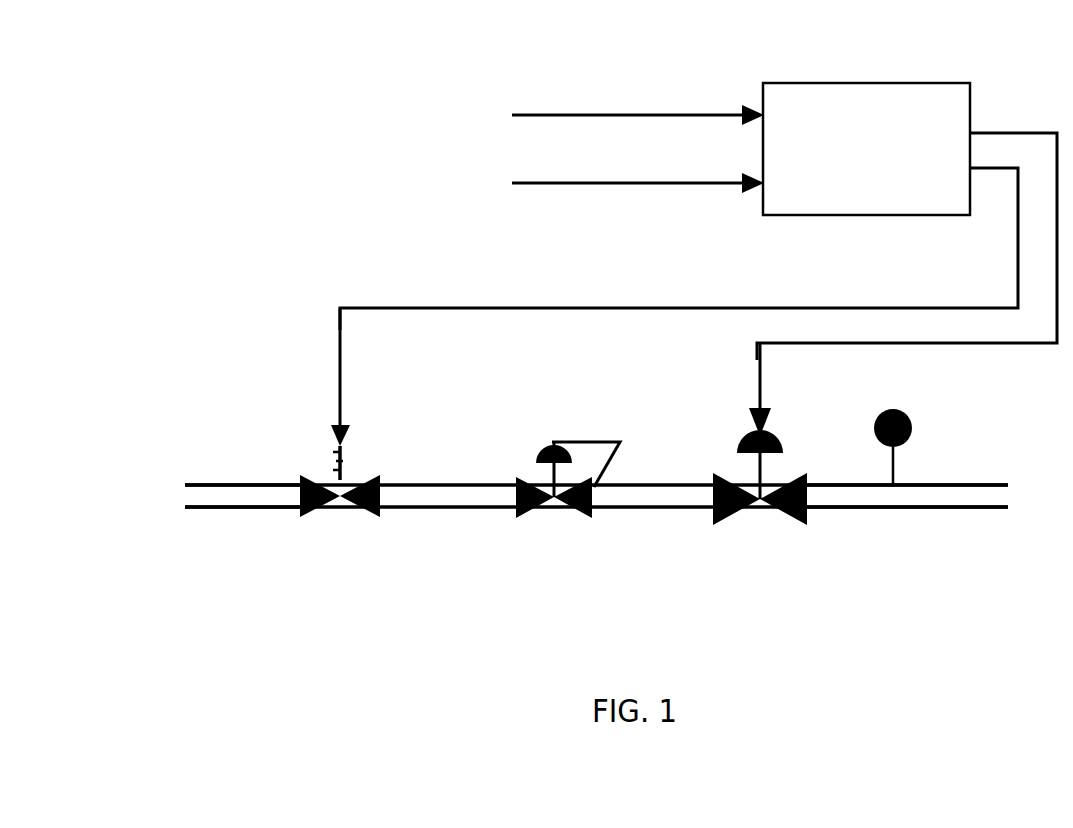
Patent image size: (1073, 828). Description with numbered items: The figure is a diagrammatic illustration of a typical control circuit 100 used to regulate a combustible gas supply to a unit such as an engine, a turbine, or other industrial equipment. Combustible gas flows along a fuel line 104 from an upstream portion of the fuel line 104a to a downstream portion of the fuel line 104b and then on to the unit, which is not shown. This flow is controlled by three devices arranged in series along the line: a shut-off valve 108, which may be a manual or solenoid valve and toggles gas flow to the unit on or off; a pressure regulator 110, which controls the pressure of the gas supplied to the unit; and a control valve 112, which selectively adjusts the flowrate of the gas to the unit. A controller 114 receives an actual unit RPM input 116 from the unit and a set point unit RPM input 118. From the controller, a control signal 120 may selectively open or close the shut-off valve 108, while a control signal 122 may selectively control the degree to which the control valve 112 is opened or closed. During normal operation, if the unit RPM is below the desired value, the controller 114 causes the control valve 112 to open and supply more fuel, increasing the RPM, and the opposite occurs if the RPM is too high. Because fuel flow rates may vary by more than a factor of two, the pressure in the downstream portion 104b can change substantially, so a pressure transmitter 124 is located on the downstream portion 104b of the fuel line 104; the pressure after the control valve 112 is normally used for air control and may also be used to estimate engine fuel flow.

The control circuit 100 is at (282, 216).
The fuel line 104 is at (246, 526).
The upstream portion of the fuel line 104a is at (227, 480).
The downstream portion of the fuel line 104b is at (998, 482).
The shut-off valve 108 is at (338, 516).
The pressure regulator 110 is at (553, 516).
The control valve 112 is at (763, 512).
The controller 114 is at (860, 77).
The actual unit RPM input 116 is at (538, 108).
The set point unit RPM input 118 is at (543, 192).
The control signal 120 is at (1005, 253).
The control signal 122 is at (1042, 123).
The pressure transmitter 124 is at (876, 422).